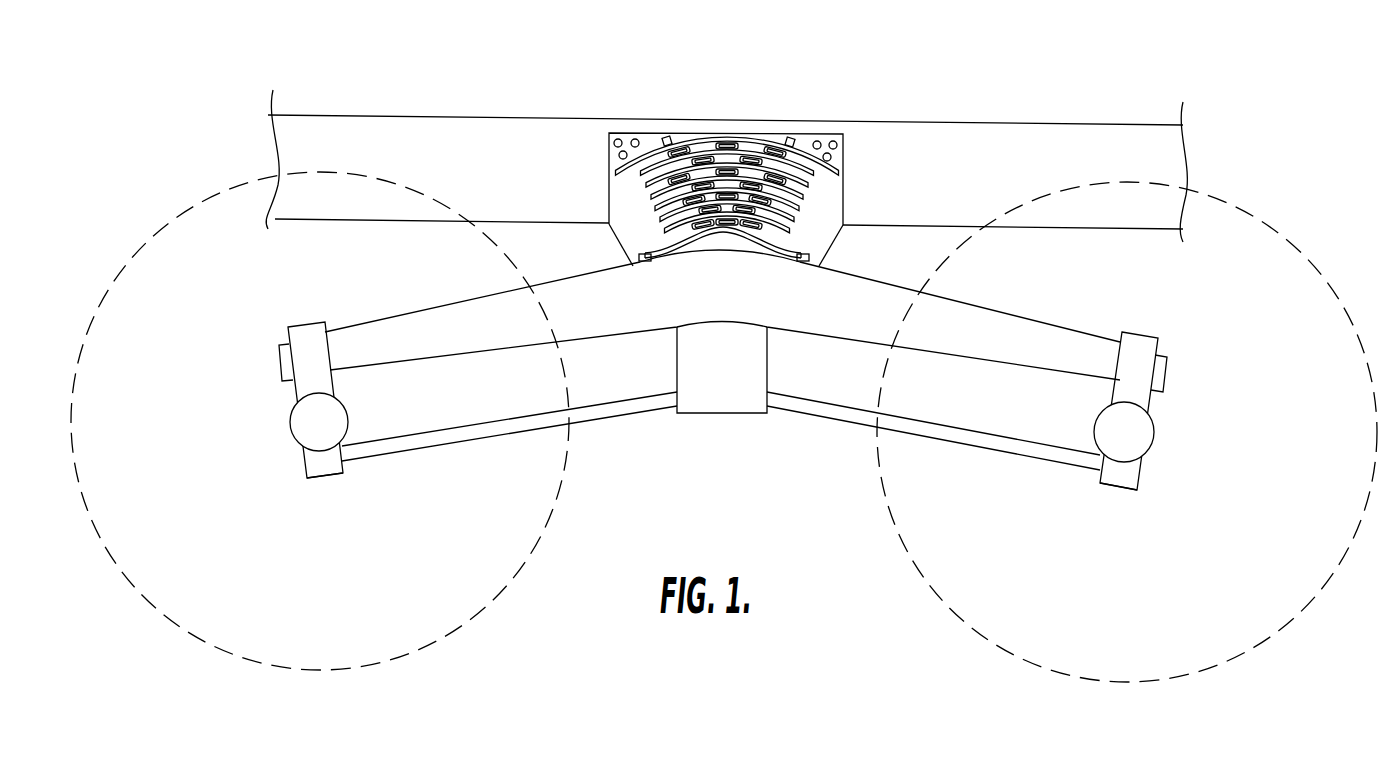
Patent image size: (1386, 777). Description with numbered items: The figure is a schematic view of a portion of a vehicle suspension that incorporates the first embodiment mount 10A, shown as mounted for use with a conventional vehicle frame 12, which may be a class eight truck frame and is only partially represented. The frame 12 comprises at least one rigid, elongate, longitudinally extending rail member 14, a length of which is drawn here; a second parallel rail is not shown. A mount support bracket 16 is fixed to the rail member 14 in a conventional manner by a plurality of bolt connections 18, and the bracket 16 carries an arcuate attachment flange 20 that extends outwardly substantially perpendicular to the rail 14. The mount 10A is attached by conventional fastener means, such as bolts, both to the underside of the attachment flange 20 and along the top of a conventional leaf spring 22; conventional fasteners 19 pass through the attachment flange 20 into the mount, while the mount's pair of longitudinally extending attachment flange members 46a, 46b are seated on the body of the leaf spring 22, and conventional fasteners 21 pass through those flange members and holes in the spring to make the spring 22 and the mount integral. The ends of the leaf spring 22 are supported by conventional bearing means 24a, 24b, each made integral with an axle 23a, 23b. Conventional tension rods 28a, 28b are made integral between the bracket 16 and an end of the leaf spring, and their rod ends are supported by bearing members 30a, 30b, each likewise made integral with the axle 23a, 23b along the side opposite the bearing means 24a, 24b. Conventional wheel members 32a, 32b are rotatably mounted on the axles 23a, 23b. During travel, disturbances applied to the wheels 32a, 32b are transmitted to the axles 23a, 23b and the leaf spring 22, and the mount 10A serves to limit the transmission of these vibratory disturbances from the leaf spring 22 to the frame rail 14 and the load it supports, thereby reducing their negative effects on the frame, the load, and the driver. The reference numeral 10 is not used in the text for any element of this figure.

The vehicle frame 12 is at (433, 92).
The rail member 14 is at (1018, 145).
The mount support bracket 16 is at (618, 200).
The bolt connections 18 is at (620, 139).
The bolt 10 is at (669, 136).
The fasteners 19 is at (790, 138).
The arcuate attachment flange 20 is at (731, 136).
The first embodiment mount 10A is at (817, 200).
The fasteners 21 is at (640, 256).
The leaf spring 22 is at (992, 337).
The attachment flange member 46a is at (645, 262).
The attachment flange member 46b is at (805, 262).
The bearing means 24a is at (306, 332).
The bearing means 24b is at (1143, 345).
The axle 23a is at (296, 422).
The axle 23b is at (1140, 438).
The tension rod 28a is at (433, 440).
The tension rod 28b is at (980, 440).
The bearing member 30a is at (330, 470).
The bearing member 30b is at (1117, 482).
The wheel member 32a is at (183, 212).
The wheel member 32b is at (1260, 218).